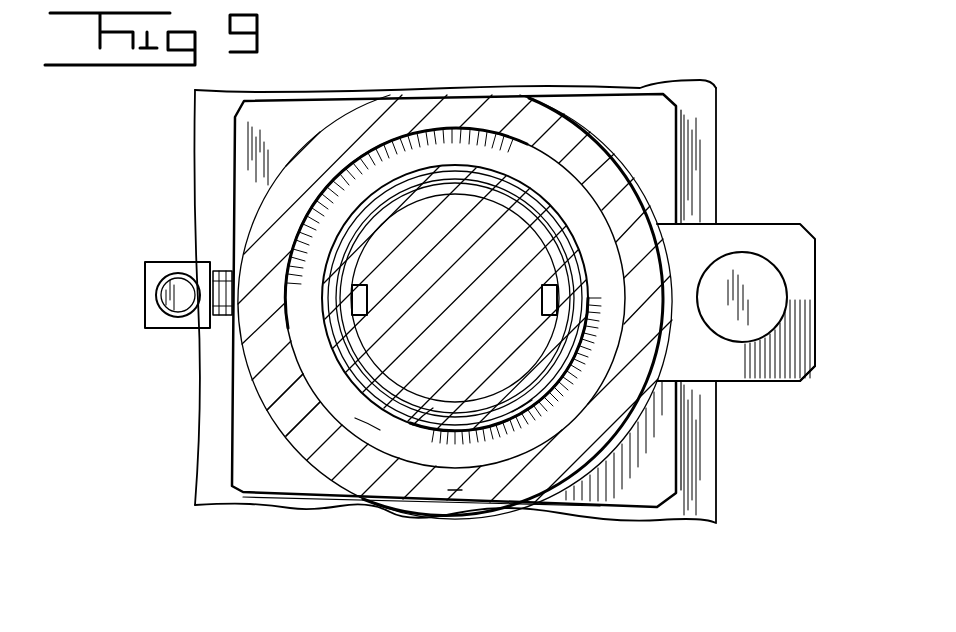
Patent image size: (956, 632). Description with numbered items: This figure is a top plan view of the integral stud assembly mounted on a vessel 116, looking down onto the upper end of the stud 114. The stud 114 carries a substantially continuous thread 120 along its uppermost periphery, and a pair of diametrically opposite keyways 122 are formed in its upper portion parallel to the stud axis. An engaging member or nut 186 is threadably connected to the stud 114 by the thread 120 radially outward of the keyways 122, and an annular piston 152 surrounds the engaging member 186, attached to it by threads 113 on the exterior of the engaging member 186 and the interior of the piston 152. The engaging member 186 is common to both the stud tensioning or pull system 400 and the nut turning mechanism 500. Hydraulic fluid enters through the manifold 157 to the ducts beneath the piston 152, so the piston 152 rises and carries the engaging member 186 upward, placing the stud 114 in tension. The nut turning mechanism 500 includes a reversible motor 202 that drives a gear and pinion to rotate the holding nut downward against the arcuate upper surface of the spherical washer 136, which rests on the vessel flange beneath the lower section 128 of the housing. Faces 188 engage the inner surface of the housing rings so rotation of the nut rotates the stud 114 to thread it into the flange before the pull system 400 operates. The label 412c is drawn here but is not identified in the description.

The vessel 116 is at (718, 90).
The thread 120 is at (550, 185).
The stud 114 is at (472, 205).
The keyways 122 is at (544, 298).
The manifold 157 is at (156, 296).
The stud tensioning or pull system 400 is at (162, 333).
The nut turning mechanism 500 is at (832, 212).
The reversible motor 202 is at (790, 270).
The lower section of the housing 128 is at (826, 352).
The threads 113 is at (318, 425).
The spherical washer 136 is at (657, 482).
The annular piston 152 is at (380, 436).
The engaging member or nut 186 is at (428, 407).
The lower edge 412c is at (455, 488).
The faces 188 is at (510, 412).